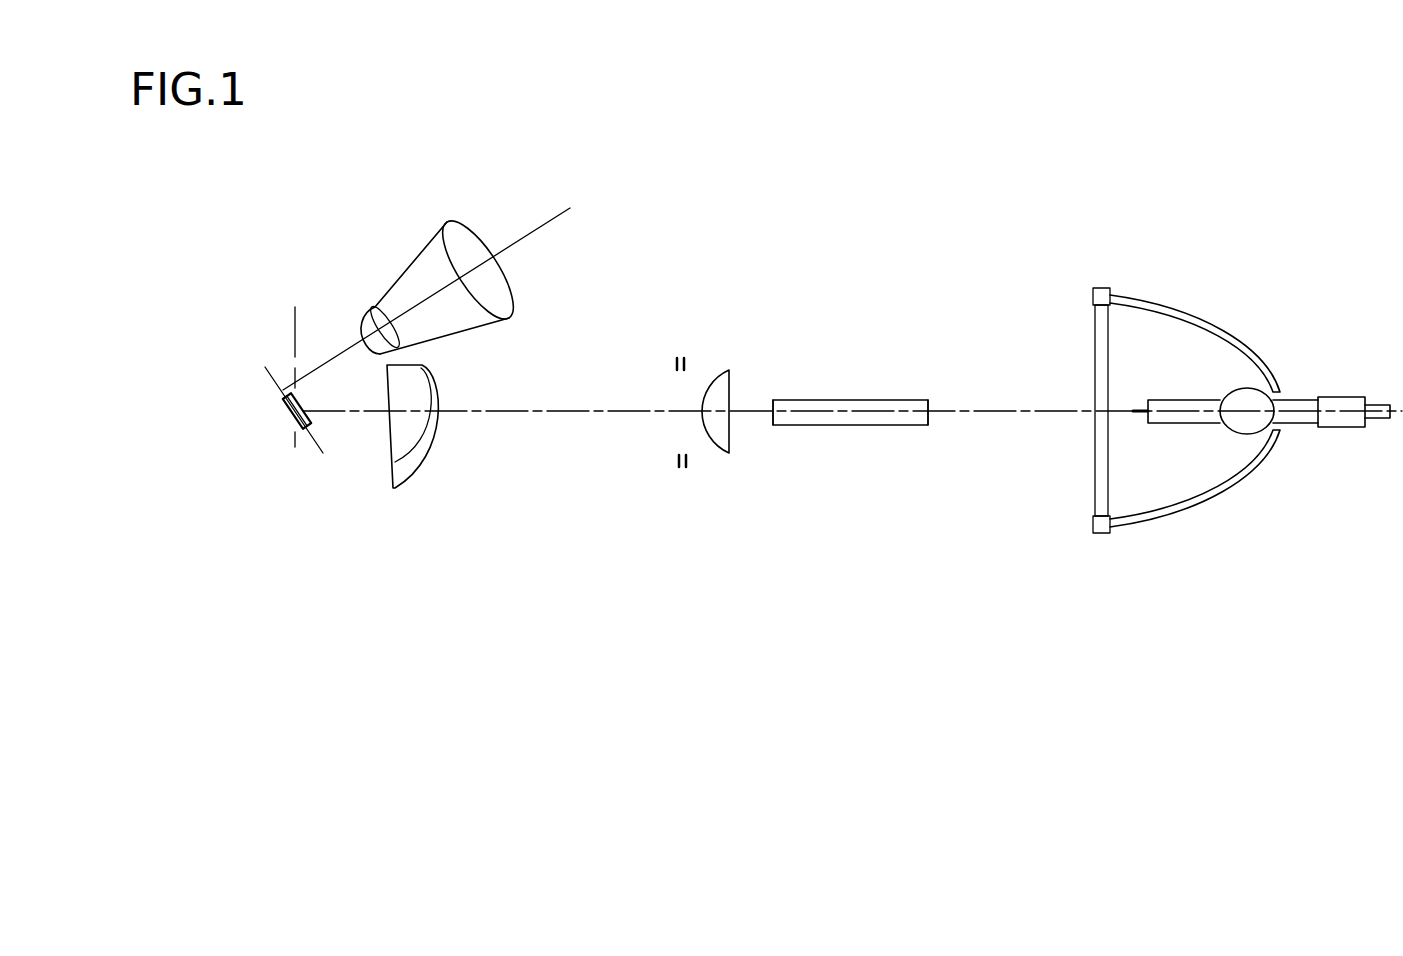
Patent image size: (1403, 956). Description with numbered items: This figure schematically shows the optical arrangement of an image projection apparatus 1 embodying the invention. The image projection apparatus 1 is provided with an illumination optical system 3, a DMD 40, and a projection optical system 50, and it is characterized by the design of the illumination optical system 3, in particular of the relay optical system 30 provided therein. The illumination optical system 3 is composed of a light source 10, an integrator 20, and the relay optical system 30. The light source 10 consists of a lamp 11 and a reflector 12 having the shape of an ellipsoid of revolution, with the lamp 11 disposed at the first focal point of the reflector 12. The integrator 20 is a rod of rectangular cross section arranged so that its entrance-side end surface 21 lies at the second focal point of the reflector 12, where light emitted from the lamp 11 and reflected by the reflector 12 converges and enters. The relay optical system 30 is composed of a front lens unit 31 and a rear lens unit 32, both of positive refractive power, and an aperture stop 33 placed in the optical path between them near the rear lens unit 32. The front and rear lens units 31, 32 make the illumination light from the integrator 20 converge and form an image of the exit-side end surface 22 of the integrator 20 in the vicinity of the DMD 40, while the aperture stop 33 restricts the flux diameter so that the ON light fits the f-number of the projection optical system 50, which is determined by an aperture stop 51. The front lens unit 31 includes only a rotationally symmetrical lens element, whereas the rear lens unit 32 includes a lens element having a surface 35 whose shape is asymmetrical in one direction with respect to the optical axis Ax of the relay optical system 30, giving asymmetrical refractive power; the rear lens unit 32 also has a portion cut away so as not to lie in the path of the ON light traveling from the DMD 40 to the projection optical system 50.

The image projection apparatus 1 is at (799, 777).
The illumination optical system 3 is at (1388, 640).
The light source 10 is at (1241, 450).
The lamp 11 is at (1252, 427).
The reflector 12 is at (1187, 507).
The integrator 20 is at (848, 415).
The entrance-side end surface 21 is at (930, 400).
The exit-side end surface 22 is at (766, 402).
The relay optical system 30 is at (548, 478).
The front lens unit 31 is at (725, 445).
The rear lens unit 32 is at (408, 434).
The aperture stop 33 is at (647, 433).
The surface 35 is at (395, 465).
The DMD 40 is at (285, 408).
The projection optical system 50 is at (426, 291).
The aperture stop 51 is at (380, 307).
The optical axis Ax is at (523, 410).